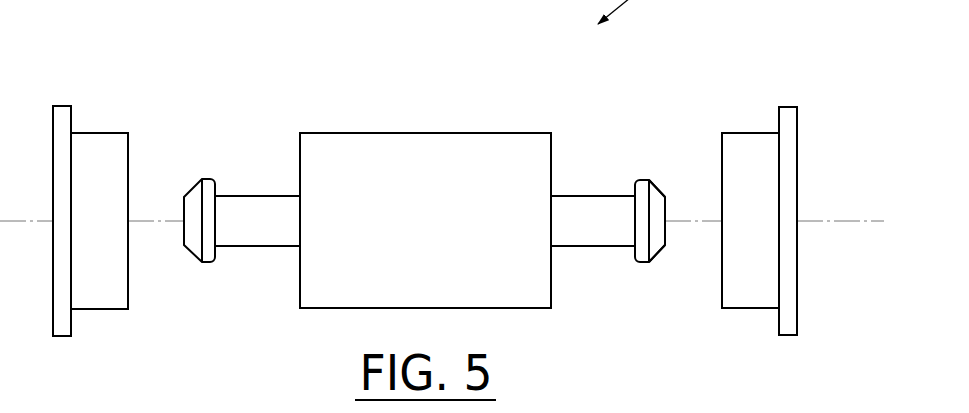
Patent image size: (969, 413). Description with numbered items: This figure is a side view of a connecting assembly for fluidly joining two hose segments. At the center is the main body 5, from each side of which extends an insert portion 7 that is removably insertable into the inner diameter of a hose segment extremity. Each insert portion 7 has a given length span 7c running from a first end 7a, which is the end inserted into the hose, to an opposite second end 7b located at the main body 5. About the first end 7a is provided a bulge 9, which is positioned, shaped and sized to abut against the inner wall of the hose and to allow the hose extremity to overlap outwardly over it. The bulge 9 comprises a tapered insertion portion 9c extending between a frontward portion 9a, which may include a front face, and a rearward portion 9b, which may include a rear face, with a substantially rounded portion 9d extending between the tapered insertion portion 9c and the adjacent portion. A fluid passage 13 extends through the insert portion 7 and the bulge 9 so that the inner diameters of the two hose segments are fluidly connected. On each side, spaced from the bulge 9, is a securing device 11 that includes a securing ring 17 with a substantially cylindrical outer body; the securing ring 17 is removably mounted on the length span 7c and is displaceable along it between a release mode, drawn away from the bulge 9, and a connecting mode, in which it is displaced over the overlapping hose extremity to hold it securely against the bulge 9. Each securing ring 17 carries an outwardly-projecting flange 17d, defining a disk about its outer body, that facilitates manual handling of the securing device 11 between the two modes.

The main body 5 is at (508, 131).
The insert portion 7 is at (222, 205).
The first end 7a is at (625, 193).
The second end 7b is at (553, 193).
The given length span 7c is at (577, 250).
The bulge 9 is at (193, 170).
The frontward portion 9a is at (667, 233).
The rearward portion 9b is at (633, 250).
The tapered insertion portion 9c is at (657, 187).
The substantially rounded portion 9d is at (642, 177).
The securing device 11 is at (97, 78).
The fluid passage 13 is at (667, 208).
The securing ring 17 is at (776, 62).
The outwardly-projecting flange 17d is at (799, 115).